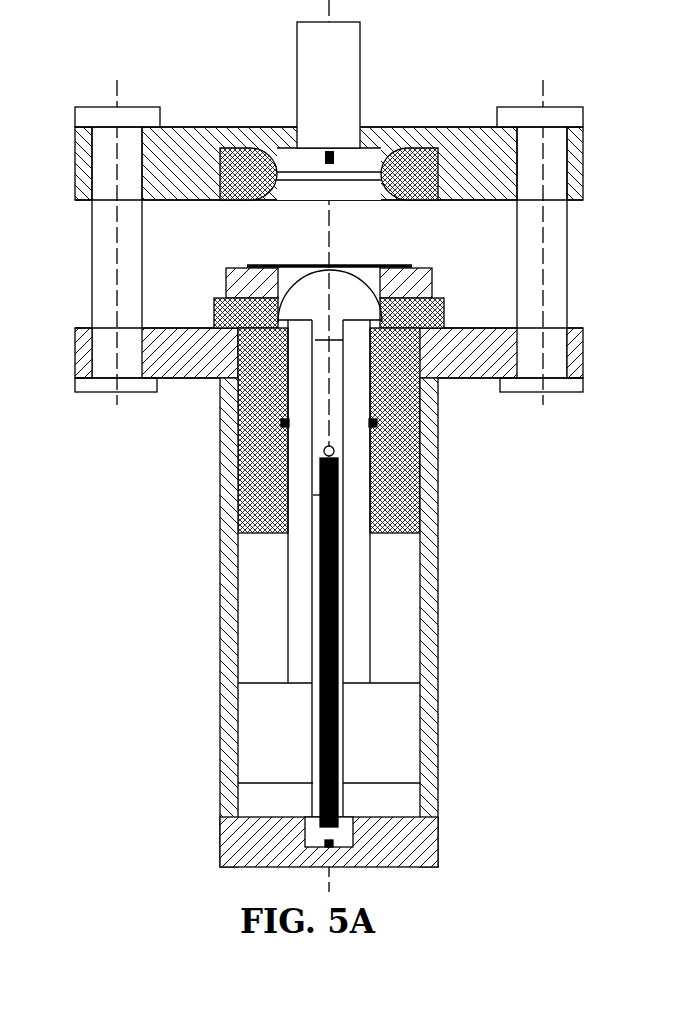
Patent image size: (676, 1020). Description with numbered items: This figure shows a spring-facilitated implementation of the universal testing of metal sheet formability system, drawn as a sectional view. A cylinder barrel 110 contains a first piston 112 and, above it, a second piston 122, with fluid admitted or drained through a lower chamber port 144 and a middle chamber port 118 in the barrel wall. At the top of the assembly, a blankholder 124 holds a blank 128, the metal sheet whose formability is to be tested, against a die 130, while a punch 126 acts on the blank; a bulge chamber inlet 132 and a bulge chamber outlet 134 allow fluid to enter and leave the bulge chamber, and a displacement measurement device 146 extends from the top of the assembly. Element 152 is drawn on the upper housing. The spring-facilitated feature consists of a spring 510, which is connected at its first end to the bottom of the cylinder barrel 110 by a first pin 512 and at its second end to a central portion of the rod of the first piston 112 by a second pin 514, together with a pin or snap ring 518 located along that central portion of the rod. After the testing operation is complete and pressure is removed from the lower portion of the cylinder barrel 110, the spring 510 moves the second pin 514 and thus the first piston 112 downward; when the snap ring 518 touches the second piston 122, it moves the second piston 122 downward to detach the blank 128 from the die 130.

The cylinder barrel 110 is at (410, 845).
The first piston 112 is at (270, 712).
The middle chamber port 118 is at (220, 563).
The second piston 122 is at (403, 458).
The blankholder 124 is at (418, 290).
The punch 126 is at (320, 298).
The blank 128 is at (282, 265).
The die 130 is at (410, 182).
The bulge chamber inlet 132 is at (430, 274).
The bulge chamber outlet 134 is at (223, 278).
The lower chamber port 144 is at (222, 800).
The displacement measurement device 146 is at (342, 78).
The upper housing 152 is at (195, 145).
The spring 510 is at (338, 618).
The first pin 512 is at (333, 845).
The second pin 514 is at (334, 452).
The snap ring 518 is at (374, 424).